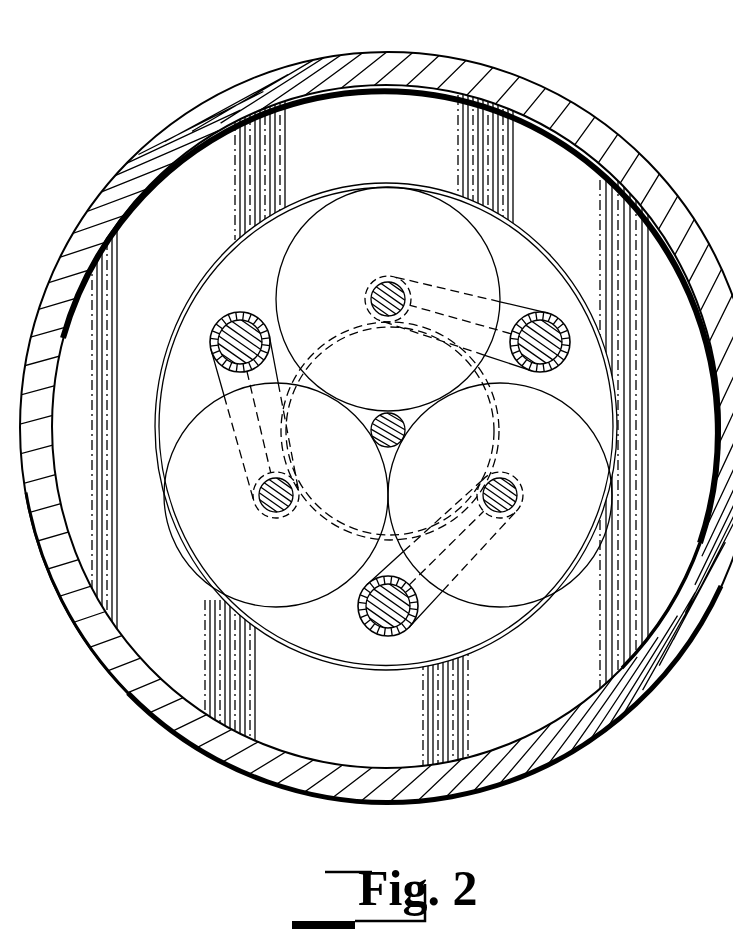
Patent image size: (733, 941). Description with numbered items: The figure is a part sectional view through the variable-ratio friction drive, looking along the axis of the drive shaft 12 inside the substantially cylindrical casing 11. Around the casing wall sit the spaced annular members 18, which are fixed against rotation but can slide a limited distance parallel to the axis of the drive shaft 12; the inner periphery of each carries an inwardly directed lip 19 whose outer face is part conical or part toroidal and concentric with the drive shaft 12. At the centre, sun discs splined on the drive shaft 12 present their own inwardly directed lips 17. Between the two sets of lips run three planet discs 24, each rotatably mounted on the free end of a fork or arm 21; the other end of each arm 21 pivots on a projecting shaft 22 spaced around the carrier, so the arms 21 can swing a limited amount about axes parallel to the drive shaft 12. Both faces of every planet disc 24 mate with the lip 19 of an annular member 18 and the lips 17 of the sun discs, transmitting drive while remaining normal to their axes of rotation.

The casing 11 is at (383, 56).
The drive shaft 12 is at (402, 436).
The lips 17 is at (495, 436).
The annular members 18 is at (391, 133).
The lip 19 is at (290, 208).
The forks or arms 21 is at (516, 303).
The projecting shaft 22 is at (241, 330).
The planet disc 24 is at (421, 236).